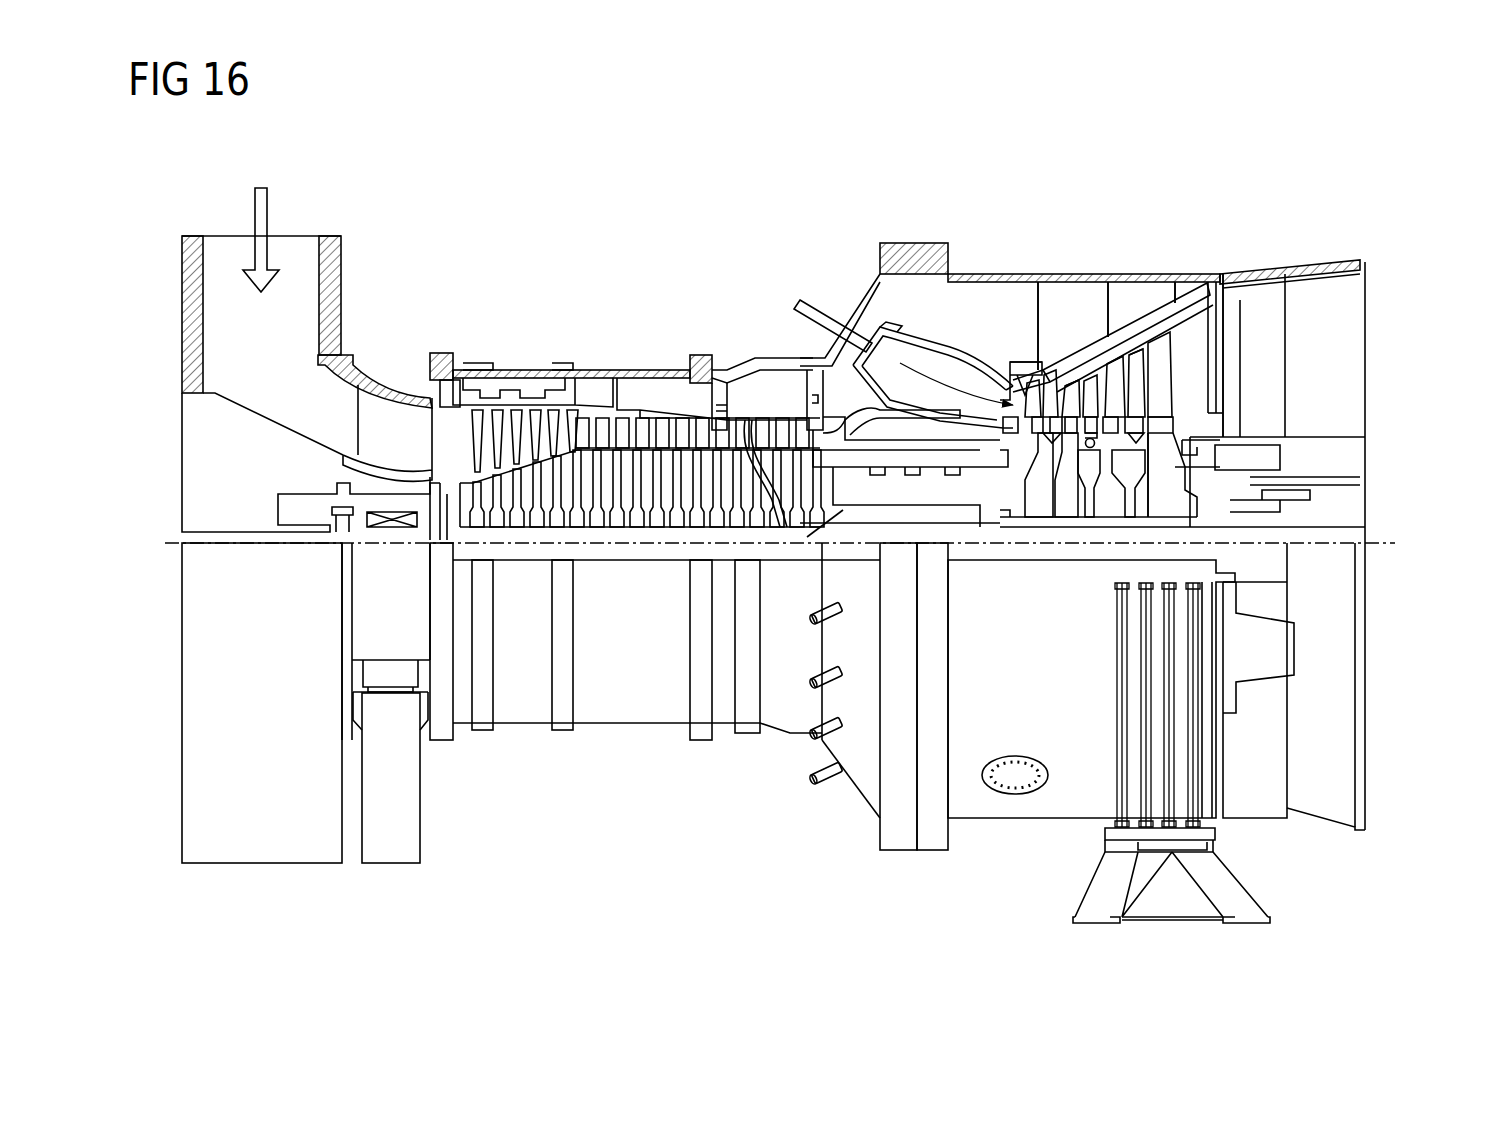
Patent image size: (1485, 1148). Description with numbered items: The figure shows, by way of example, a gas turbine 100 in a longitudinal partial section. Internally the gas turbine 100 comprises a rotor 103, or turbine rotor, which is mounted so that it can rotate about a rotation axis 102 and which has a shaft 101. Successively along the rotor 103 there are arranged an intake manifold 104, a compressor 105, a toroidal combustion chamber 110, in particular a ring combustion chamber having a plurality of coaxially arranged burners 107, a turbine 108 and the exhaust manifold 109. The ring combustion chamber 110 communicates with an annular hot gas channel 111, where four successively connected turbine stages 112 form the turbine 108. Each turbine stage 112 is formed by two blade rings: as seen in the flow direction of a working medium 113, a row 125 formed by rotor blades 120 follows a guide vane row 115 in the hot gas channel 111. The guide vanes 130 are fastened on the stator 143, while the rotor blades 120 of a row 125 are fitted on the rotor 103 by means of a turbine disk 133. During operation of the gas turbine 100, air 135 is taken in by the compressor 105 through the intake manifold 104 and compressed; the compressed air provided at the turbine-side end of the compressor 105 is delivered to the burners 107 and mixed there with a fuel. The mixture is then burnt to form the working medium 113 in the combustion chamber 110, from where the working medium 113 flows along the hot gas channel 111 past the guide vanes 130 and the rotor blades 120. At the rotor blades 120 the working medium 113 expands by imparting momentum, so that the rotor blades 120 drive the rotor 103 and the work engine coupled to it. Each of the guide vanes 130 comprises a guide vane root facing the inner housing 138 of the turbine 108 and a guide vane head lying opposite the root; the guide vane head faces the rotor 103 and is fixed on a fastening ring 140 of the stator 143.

The gas turbine 100 is at (616, 247).
The shaft 101 is at (843, 510).
The rotation axis 102 is at (178, 537).
The rotor 103 is at (1185, 400).
The intake manifold 104 is at (330, 302).
The compressor 105 is at (540, 353).
The burners 107 is at (845, 325).
The turbine 108 is at (1040, 243).
The exhaust manifold 109 is at (1280, 268).
The combustion chamber 110 is at (912, 350).
The hot gas channel 111 is at (1240, 270).
The turbine stages 112 is at (1165, 238).
The working medium 113 is at (933, 380).
The guide vane row 115 is at (1130, 308).
The rotor blades 120 is at (1114, 408).
The row 125 is at (1190, 293).
The guide vanes 130 is at (1072, 408).
The turbine disk 133 is at (1160, 507).
The air 135 is at (267, 225).
The inner housing 138 is at (1070, 328).
The fastening ring 140 is at (1050, 400).
The stator 143 is at (998, 272).